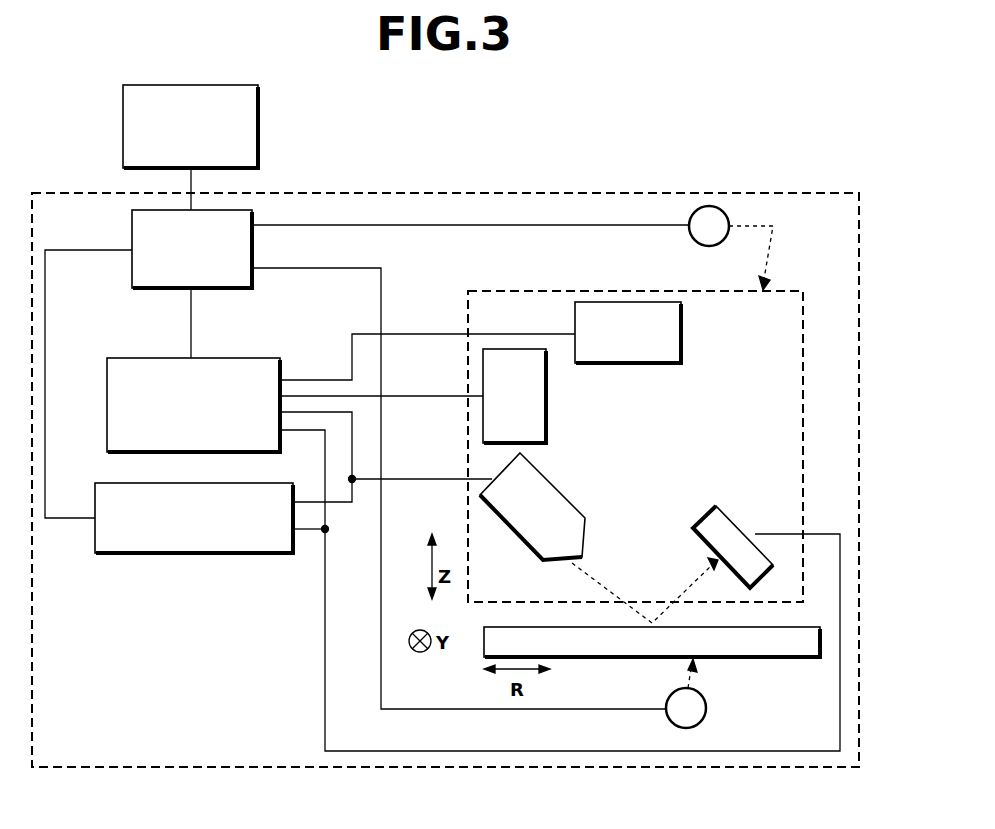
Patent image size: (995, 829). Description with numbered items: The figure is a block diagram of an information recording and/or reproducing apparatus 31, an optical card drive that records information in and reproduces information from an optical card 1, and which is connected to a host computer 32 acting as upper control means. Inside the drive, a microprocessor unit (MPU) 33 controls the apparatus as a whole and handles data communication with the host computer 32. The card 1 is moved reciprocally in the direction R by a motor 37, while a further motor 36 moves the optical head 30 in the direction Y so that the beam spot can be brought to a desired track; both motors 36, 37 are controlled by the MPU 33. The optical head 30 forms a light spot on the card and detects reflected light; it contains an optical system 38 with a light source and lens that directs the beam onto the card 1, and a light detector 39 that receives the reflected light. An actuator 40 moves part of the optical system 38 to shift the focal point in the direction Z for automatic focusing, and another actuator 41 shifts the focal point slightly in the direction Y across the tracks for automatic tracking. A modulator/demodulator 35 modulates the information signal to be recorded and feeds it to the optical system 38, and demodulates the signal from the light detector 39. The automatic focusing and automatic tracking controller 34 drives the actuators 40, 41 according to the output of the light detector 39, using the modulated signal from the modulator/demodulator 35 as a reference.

The optical card 1 is at (792, 650).
The optical head 30 is at (787, 282).
The information recording and/or reproducing apparatus 31 is at (457, 188).
The host computer 32 is at (258, 123).
The microprocessor unit (MPU) 33 is at (252, 212).
The automatic focusing and automatic tracking controller 34 is at (232, 360).
The modulator/demodulator 35 is at (165, 555).
The motor for moving the optical head 36 is at (709, 206).
The motor 37 is at (706, 708).
The optical system 38 is at (570, 562).
The light detector 39 is at (735, 520).
The actuator 40 is at (510, 349).
The actuator 41 is at (625, 302).